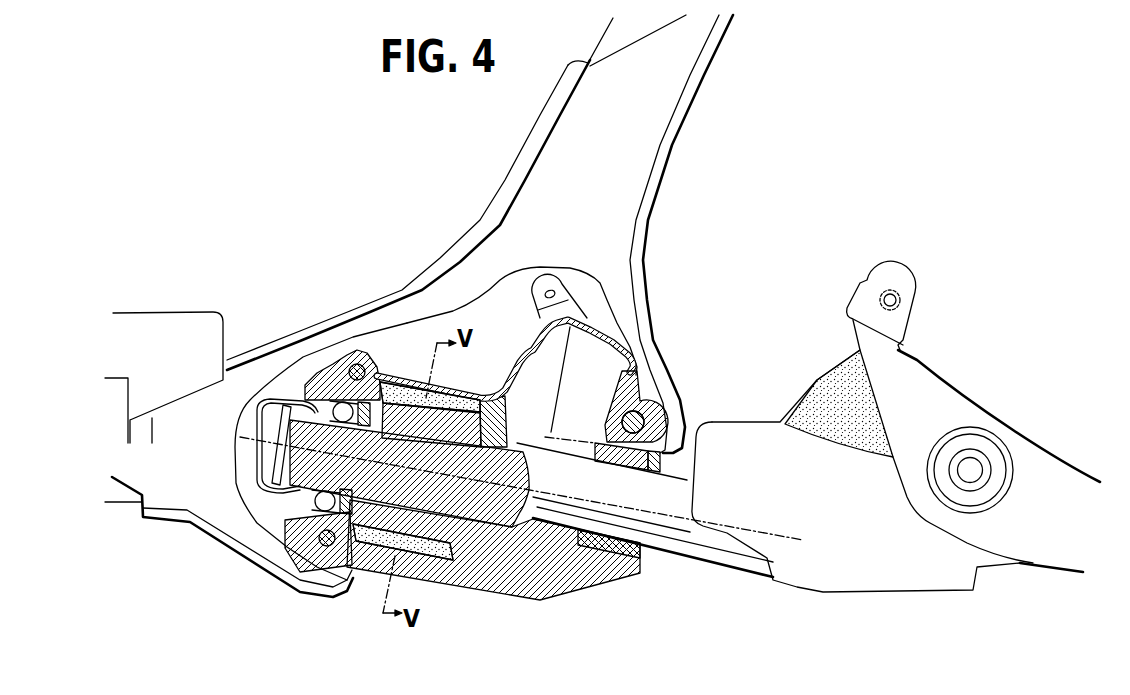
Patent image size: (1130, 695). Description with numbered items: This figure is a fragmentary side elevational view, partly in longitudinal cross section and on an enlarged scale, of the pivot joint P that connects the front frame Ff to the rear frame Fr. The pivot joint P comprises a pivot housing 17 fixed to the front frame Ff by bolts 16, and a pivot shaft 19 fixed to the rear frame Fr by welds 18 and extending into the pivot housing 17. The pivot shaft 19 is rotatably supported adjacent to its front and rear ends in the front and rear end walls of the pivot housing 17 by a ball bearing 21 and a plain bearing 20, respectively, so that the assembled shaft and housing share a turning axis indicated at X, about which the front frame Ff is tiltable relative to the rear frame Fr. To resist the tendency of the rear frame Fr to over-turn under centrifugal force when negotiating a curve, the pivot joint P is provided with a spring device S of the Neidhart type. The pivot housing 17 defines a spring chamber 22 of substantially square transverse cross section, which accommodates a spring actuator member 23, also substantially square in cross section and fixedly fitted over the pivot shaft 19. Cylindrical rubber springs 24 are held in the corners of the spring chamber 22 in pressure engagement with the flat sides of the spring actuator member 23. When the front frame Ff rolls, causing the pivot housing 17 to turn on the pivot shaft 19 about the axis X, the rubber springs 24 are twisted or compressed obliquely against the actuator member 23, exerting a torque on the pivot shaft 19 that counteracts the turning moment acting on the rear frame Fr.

The bolts 16 is at (363, 367).
The pivot housing 17 is at (517, 598).
The welds 18 is at (771, 581).
The pivot shaft 19 is at (418, 478).
The plain bearing 20 is at (620, 466).
The ball bearing 21 is at (313, 500).
The spring chamber 22 is at (452, 394).
The spring actuator member 23 is at (430, 503).
The rubber springs 24 is at (437, 562).
The front frame Ff is at (492, 224).
The rear frame Fr is at (732, 440).
The pivot joint P is at (291, 394).
The spring device S is at (423, 396).
The pivot axis X is at (763, 534).